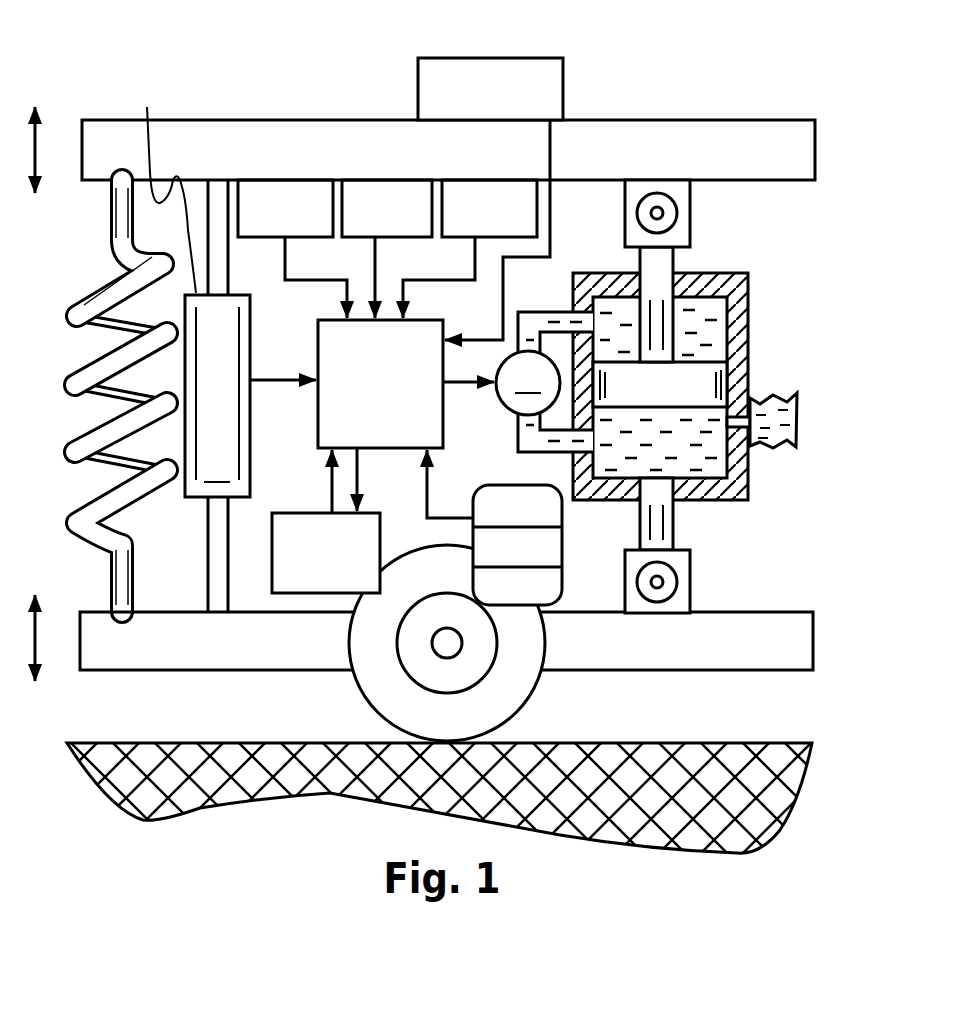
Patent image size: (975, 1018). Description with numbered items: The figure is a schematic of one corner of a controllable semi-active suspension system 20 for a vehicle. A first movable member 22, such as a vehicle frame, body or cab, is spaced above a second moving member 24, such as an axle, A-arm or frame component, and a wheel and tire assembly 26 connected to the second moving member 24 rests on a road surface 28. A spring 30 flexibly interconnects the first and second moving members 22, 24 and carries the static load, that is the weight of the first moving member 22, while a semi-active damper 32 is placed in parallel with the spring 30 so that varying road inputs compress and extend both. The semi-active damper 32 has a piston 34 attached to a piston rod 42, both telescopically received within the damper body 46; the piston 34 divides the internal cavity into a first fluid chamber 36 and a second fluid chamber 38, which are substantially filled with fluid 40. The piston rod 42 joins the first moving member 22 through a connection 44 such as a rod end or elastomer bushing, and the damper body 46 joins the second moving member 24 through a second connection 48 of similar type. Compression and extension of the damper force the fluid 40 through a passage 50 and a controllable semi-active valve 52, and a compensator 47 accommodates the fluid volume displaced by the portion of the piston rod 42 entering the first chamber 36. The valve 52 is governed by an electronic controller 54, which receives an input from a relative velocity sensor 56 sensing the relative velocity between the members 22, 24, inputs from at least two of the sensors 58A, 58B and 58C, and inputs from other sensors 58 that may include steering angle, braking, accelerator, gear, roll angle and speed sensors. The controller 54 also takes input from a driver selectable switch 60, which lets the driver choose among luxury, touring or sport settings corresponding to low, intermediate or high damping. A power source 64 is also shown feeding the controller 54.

The controllable semi-active suspension system 20 is at (466, 430).
The first movable member 22 is at (580, 120).
The second moving member 24 is at (237, 670).
The wheel and tire assembly 26 is at (353, 687).
The road surface 28 is at (540, 743).
The spring 30 is at (97, 277).
The semi-active damper 32 is at (711, 386).
The piston 34 is at (669, 399).
The first fluid chamber 36 is at (629, 339).
The second fluid chamber 38 is at (629, 459).
The fluid 40 is at (717, 313).
The piston rod 42 is at (673, 262).
The connection 44 is at (690, 213).
The damper body 46 is at (705, 500).
The compensator 47 is at (760, 447).
The second connection 48 is at (677, 583).
The passage 50 is at (552, 313).
The controllable semi-active valve 52 is at (501, 383).
The electronic controller 54 is at (318, 348).
The relative velocity sensor 56 is at (198, 323).
The other sensors 58 is at (453, 58).
The sensor 58A is at (282, 180).
The sensor 58B is at (392, 180).
The sensor 58C is at (503, 180).
The driver selectable switch 60 is at (657, 690).
The power source 64 is at (272, 513).